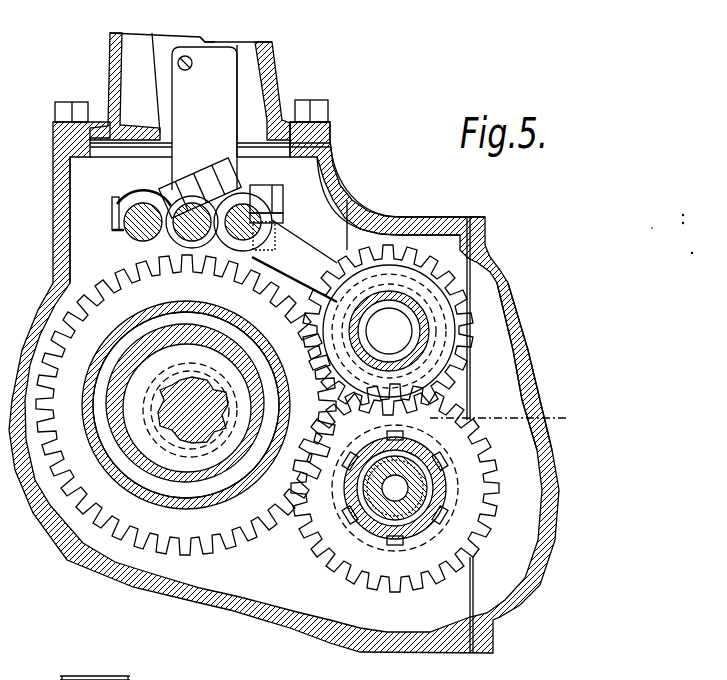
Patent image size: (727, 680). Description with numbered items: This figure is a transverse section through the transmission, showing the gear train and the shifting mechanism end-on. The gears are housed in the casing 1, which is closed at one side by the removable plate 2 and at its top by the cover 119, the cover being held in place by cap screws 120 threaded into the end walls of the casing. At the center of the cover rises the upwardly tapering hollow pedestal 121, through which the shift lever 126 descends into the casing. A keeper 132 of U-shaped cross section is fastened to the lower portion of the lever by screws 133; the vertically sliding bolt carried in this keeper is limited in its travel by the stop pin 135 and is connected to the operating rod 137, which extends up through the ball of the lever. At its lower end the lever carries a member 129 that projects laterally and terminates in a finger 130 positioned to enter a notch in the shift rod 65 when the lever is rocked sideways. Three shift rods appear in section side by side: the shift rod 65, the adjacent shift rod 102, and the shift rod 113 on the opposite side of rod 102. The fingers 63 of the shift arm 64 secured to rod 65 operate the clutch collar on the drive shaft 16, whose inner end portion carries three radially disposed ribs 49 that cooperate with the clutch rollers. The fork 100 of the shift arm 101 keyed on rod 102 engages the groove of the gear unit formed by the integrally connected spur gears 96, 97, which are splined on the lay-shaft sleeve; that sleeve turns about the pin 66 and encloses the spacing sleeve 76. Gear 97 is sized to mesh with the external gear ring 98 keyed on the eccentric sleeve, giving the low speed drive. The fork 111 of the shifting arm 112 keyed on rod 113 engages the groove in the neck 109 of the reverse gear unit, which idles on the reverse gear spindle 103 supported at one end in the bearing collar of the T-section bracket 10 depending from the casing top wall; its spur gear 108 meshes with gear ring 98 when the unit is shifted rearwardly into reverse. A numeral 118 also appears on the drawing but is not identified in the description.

The casing 1 is at (37, 497).
The plate 2 is at (528, 366).
The bracket 10 is at (362, 212).
The fork 111 is at (410, 224).
The cover 119 is at (333, 132).
The cap screws 120 is at (330, 112).
The shift lever 126 is at (154, 40).
The operating rod 137 is at (215, 40).
The hollow pedestal 121 is at (213, 43).
The keeper 132 is at (240, 68).
The screws 133 is at (180, 92).
The stop pin 135 is at (185, 70).
The shift rod 102 is at (203, 178).
The member 129 is at (130, 182).
The finger 130 is at (118, 204).
The shift rod 65 is at (128, 235).
The shift arm 101 is at (285, 220).
The shift rod 113 is at (283, 212).
The shifting arm 112 is at (290, 245).
The external gear ring 98 is at (244, 540).
The shift arm 64 is at (100, 440).
The fingers 63 is at (125, 481).
The gear hub 118 is at (161, 492).
The ribs 49 is at (260, 444).
The shaft 16 is at (222, 422).
The spur gear 108 is at (478, 322).
The neck 109 is at (472, 336).
The reverse gear spindle 103 is at (407, 321).
The fork 100 is at (517, 420).
The spur gear 96 is at (478, 444).
The spur gear 97 is at (472, 459).
The spacing sleeve 76 is at (412, 497).
The pin 66 is at (447, 507).